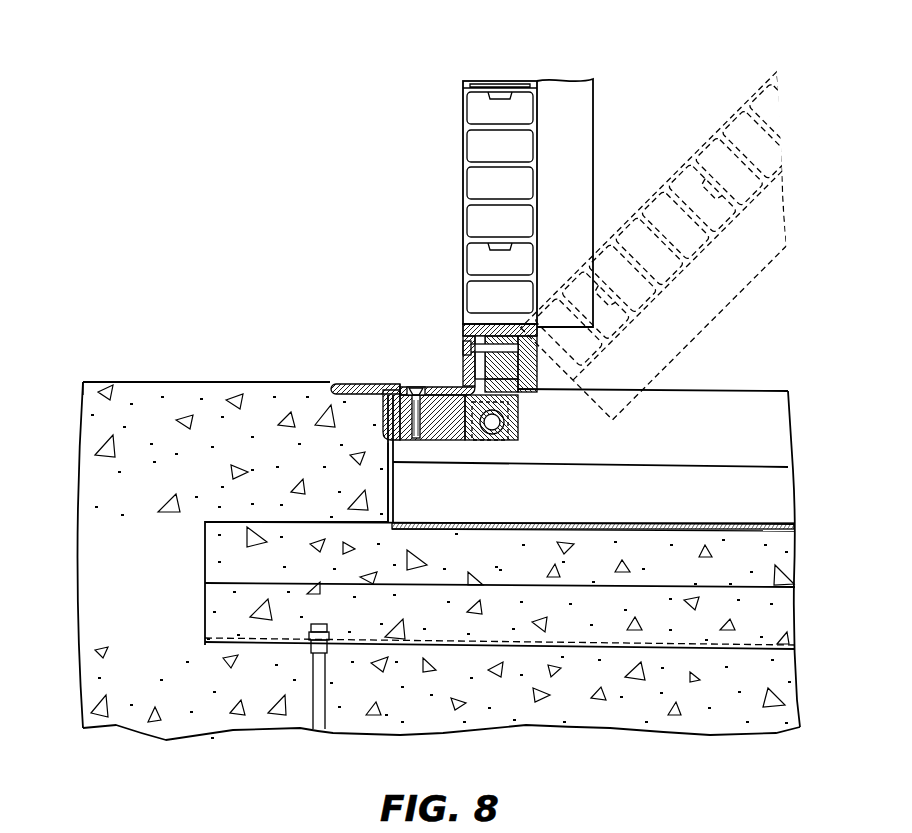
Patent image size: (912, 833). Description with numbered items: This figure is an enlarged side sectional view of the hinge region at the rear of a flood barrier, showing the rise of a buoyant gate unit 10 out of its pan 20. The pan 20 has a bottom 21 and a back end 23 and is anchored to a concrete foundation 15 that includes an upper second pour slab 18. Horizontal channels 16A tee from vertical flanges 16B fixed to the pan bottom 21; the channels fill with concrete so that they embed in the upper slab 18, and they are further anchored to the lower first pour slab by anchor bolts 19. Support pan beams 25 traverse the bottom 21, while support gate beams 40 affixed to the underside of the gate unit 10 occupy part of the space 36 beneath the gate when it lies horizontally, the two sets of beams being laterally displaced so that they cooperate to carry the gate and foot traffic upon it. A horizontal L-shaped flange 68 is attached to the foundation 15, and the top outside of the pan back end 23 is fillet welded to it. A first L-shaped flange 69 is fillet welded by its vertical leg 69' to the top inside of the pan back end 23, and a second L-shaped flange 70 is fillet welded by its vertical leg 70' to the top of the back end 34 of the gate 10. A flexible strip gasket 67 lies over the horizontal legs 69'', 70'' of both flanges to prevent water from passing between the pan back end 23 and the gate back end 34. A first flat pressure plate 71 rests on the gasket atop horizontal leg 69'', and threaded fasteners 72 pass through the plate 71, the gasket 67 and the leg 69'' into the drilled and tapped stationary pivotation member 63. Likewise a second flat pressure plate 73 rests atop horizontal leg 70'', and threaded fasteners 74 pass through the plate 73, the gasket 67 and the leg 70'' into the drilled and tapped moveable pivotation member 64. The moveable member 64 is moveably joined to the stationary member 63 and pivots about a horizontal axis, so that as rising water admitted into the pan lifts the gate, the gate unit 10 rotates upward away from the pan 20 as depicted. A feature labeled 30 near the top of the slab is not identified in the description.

The multi-panel gate unit 10 is at (461, 112).
The concrete foundation 15 is at (83, 418).
The horizontal channels 16A is at (780, 618).
The vertical flanges 16B is at (780, 561).
The second pour slab 18 is at (146, 506).
The anchor bolts 19 is at (313, 686).
The pan 20 is at (760, 466).
The pan bottom 21 is at (764, 527).
The back end of pan 23 is at (393, 500).
The support pan beams 25 is at (619, 507).
The top surface 30 is at (103, 382).
The back end of gate unit 34 is at (466, 320).
The space under gate unit 36 is at (747, 490).
The support gate beams 40 is at (577, 102).
The stationary pivotation member 63 is at (455, 430).
The moveable pivotation member 64 is at (513, 394).
The flexible strip gasket 67 is at (460, 380).
The horizontal L-shaped foundation flange 68 is at (345, 385).
The first L-shaped flange 69 is at (380, 397).
The vertical leg of first L-shaped flange 69' is at (416, 443).
The horizontal leg of first L-shaped flange 69'' is at (443, 449).
The second L-shaped flange 70 is at (471, 311).
The vertical leg of second L-shaped flange 70' is at (532, 407).
The horizontal leg of second L-shaped flange 70'' is at (580, 362).
The first flat pressure plate 71 is at (487, 378).
The threaded fasteners 72 is at (430, 388).
The second flat pressure plate 73 is at (478, 344).
The threaded fasteners 74 is at (503, 352).